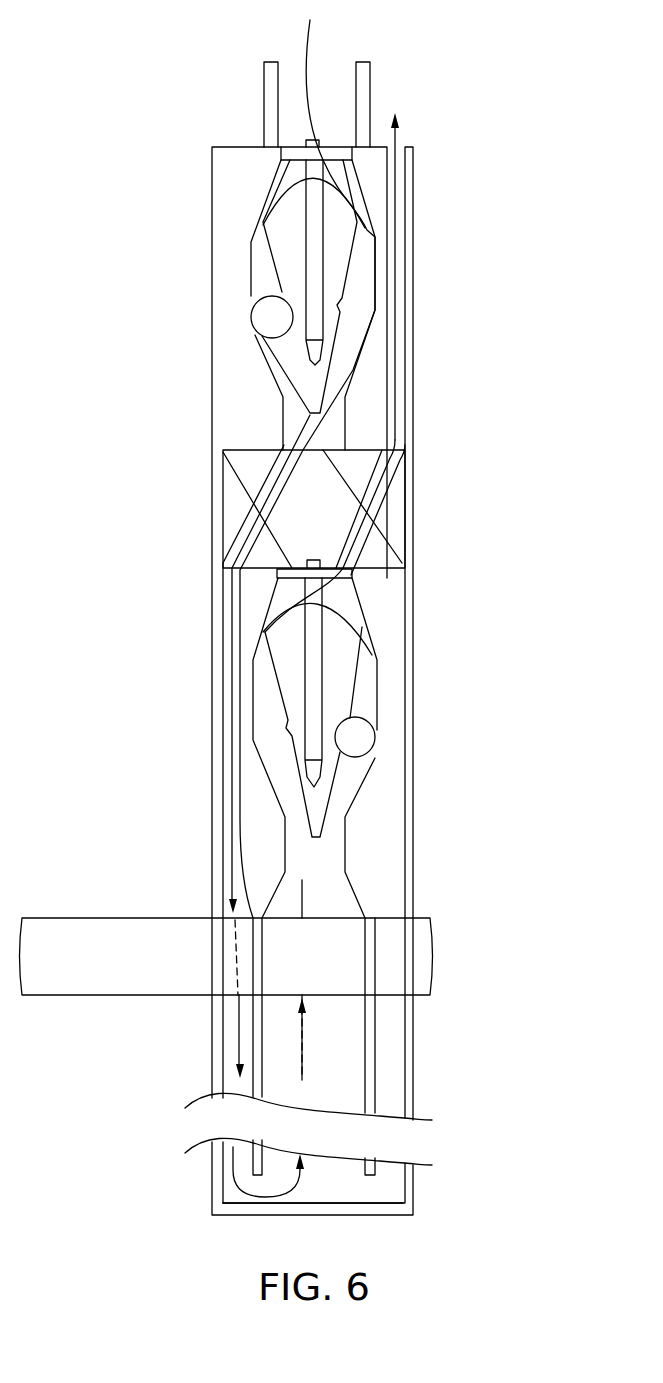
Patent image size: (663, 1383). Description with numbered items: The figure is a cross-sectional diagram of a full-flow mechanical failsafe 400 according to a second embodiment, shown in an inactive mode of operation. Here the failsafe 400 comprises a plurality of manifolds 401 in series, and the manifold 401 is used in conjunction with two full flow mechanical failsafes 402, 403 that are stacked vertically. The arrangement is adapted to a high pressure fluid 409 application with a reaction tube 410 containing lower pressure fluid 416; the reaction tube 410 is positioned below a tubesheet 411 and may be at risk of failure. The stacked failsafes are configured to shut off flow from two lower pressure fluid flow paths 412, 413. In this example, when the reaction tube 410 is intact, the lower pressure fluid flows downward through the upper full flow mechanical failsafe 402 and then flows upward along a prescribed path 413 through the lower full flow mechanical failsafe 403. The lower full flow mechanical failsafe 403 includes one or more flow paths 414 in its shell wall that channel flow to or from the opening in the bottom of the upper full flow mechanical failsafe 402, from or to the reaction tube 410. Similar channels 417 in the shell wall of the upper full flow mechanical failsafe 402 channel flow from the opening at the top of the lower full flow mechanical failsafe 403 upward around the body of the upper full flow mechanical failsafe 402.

The full-flow mechanical failsafe 400 is at (472, 752).
The manifold 401 is at (428, 455).
The upper full flow mechanical failsafe 402 is at (211, 266).
The lower full flow mechanical failsafe 403 is at (211, 662).
The high pressure fluid 409 is at (130, 1061).
The reaction tube 410 is at (212, 1187).
The tubesheet 411 is at (135, 938).
The lower pressure fluid flow path 412 is at (311, 34).
The prescribed path 413 is at (302, 882).
The flow paths 414 is at (226, 752).
The lower pressure fluid 416 is at (340, 1075).
The channels 417 is at (407, 276).